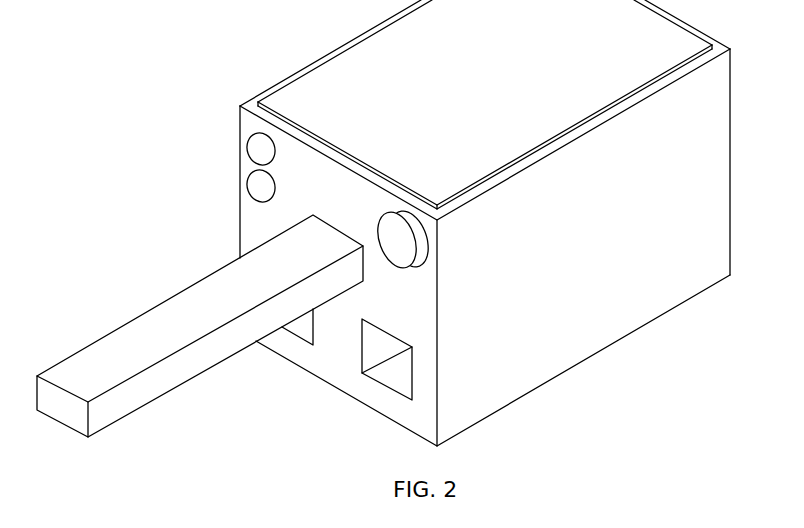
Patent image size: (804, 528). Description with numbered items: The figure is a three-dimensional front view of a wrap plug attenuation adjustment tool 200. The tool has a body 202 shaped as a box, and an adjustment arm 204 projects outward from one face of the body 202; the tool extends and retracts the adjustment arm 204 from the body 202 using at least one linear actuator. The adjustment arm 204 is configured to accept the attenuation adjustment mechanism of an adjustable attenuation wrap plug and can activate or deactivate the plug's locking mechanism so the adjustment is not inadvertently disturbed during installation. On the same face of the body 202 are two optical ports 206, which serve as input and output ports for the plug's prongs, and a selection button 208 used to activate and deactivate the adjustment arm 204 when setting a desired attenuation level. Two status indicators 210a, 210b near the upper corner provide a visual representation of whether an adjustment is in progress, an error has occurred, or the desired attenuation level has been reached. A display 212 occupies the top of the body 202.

The attenuation adjustment tool 200 is at (192, 45).
The body 202 is at (333, 50).
The adjustment arm 204 is at (158, 327).
The optical ports 206 is at (392, 377).
The selection button 208 is at (402, 250).
The status indicator 210a is at (255, 144).
The status indicator 210b is at (255, 189).
The display 212 is at (498, 78).